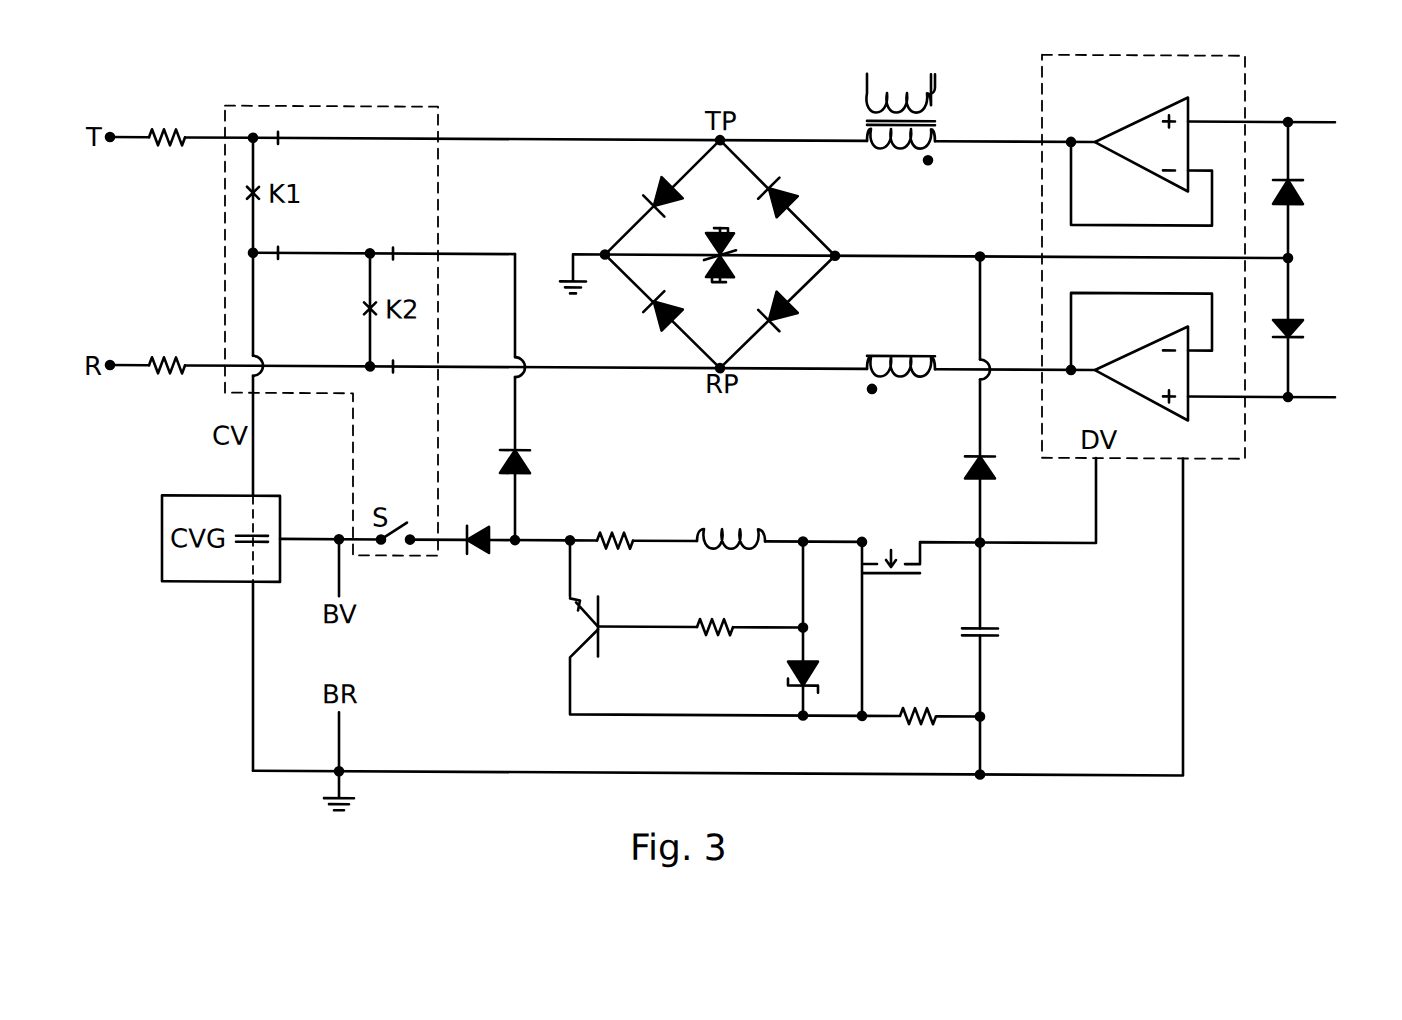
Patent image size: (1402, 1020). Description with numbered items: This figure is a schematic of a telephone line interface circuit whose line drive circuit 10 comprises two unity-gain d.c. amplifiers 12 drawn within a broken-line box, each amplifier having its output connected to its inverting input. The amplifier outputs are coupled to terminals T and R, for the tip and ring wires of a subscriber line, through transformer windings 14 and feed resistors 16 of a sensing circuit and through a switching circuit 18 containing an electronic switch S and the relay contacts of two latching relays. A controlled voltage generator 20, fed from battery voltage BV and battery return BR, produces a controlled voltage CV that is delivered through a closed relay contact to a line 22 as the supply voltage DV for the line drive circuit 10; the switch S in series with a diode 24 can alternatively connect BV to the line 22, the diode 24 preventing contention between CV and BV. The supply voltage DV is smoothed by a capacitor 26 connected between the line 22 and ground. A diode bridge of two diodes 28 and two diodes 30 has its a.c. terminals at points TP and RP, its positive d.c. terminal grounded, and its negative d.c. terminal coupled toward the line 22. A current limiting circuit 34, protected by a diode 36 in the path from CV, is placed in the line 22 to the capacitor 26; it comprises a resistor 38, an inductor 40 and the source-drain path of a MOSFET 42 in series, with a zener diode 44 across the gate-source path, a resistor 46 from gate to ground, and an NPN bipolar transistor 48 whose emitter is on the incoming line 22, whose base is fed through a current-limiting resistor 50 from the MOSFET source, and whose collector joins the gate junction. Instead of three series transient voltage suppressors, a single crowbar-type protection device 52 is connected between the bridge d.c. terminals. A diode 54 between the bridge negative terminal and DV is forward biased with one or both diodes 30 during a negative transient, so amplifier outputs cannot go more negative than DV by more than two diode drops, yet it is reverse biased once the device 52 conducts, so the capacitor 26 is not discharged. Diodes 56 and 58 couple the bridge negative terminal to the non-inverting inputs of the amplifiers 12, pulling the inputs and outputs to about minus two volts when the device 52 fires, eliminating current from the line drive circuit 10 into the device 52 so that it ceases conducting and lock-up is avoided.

The line drive circuit 10 is at (1243, 95).
The unity-gain d.c. amplifier 12 is at (1130, 378).
The transformer winding 14 is at (891, 356).
The feed resistor 16 is at (160, 152).
The switching circuit 18 is at (425, 211).
The controlled voltage generator 20 is at (168, 507).
The line 22 is at (528, 549).
The diode 24 is at (468, 559).
The capacitor 26 is at (998, 628).
The diode 28 is at (648, 324).
The diode 30 is at (788, 318).
The current limiting circuit 34 is at (545, 700).
The diode 36 is at (522, 459).
The resistor 38 is at (608, 530).
The inductor 40 is at (733, 528).
The MOSFET 42 is at (900, 580).
The zener diode 44 is at (786, 670).
The resistor 46 is at (928, 680).
The NPN bipolar transistor 48 is at (606, 640).
The current-limiting resistor 50 is at (722, 588).
The crowbar-type protection device 52 is at (712, 226).
The diode 54 is at (996, 462).
The diode 56 is at (1305, 184).
The diode 58 is at (1305, 332).